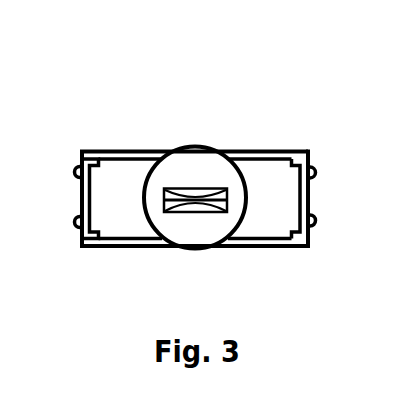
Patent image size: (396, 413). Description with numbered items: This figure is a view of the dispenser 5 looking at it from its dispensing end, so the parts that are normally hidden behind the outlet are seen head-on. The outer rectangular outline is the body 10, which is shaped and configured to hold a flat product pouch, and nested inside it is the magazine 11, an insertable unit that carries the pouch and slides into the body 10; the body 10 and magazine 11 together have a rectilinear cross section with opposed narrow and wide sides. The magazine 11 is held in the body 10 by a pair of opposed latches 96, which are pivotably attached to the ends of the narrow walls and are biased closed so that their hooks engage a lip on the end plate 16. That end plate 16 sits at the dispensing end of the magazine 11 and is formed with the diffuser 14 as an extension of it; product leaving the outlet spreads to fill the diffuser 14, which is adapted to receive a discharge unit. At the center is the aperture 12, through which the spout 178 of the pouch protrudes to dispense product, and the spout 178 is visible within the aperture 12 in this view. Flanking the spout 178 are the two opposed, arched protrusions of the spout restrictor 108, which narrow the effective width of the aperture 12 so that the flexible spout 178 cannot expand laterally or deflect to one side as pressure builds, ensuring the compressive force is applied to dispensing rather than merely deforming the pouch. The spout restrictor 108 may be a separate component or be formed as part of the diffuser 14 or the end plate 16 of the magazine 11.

The dispenser 5 is at (67, 54).
The body 10 is at (143, 247).
The magazine 11 is at (266, 228).
The aperture 12 is at (247, 150).
The diffuser 14 is at (245, 233).
The end plate 16 is at (268, 167).
The latches 96 is at (78, 204).
The spout restrictor 108 is at (186, 188).
The spout 178 is at (160, 192).